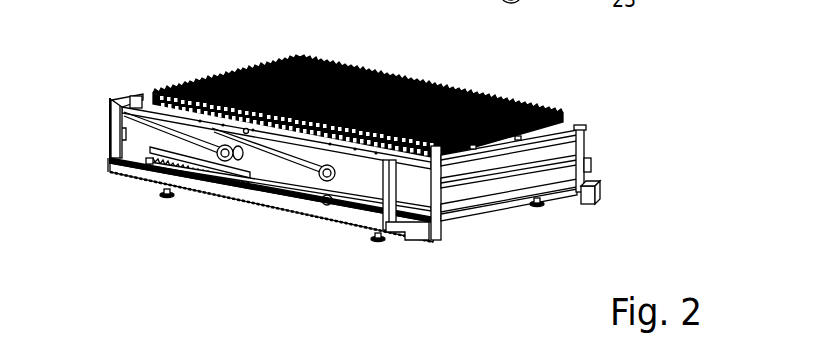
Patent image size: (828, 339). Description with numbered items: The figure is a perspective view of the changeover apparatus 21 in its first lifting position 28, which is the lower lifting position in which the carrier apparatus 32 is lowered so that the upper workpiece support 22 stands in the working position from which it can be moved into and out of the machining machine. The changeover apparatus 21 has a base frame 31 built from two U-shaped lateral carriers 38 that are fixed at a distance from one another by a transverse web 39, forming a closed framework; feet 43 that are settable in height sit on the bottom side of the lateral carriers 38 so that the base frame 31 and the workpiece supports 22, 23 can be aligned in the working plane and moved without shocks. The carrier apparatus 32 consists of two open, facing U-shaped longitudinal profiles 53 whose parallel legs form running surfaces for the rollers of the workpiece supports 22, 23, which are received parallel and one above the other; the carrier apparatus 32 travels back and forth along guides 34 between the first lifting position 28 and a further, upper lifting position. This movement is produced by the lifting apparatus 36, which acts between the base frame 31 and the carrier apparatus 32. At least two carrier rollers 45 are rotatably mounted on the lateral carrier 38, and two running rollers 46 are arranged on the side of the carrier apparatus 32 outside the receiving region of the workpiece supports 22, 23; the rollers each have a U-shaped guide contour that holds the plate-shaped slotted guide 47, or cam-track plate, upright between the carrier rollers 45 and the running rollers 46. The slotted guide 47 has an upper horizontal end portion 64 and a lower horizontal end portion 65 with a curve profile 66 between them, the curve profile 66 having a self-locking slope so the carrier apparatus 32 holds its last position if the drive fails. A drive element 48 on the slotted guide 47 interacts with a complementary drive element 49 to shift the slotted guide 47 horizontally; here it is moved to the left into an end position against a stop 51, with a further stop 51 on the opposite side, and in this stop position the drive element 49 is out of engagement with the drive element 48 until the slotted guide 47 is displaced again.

The changeover apparatus 21 is at (621, 108).
The upper workpiece support 22 is at (565, 109).
The workpiece support 23 is at (587, 160).
The first lifting position 28 is at (609, 179).
The base frame 31 is at (429, 258).
The carrier apparatus 32 is at (487, 223).
The guides 34 is at (95, 138).
The lifting apparatus 36 is at (292, 216).
The lateral carrier 38 is at (587, 206).
The transverse web 39 is at (521, 197).
The feet 43 is at (162, 199).
The carrier roller 45 is at (328, 208).
The running roller 46 is at (342, 202).
The slotted guide 47 is at (305, 185).
The drive element 48 is at (197, 172).
The complementary drive element 49 is at (231, 188).
The stop 51 is at (123, 99).
The longitudinal profile 53 is at (591, 166).
The upper horizontal end portion 64 is at (136, 97).
The lower horizontal end portion 65 is at (242, 160).
The curve profile 66 is at (150, 162).